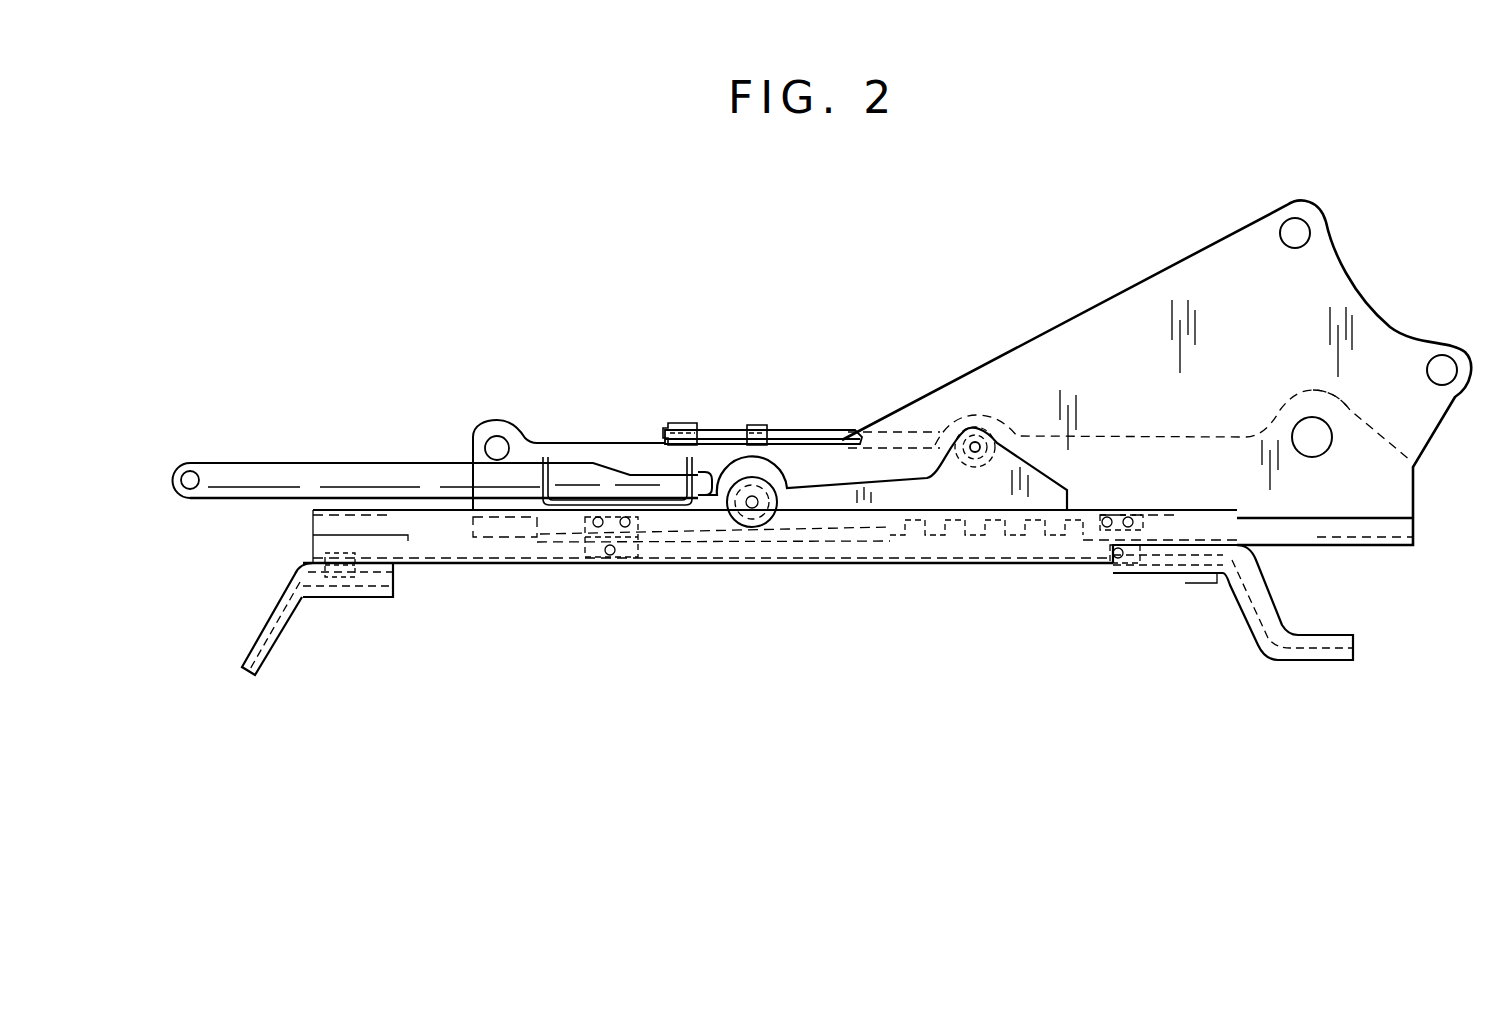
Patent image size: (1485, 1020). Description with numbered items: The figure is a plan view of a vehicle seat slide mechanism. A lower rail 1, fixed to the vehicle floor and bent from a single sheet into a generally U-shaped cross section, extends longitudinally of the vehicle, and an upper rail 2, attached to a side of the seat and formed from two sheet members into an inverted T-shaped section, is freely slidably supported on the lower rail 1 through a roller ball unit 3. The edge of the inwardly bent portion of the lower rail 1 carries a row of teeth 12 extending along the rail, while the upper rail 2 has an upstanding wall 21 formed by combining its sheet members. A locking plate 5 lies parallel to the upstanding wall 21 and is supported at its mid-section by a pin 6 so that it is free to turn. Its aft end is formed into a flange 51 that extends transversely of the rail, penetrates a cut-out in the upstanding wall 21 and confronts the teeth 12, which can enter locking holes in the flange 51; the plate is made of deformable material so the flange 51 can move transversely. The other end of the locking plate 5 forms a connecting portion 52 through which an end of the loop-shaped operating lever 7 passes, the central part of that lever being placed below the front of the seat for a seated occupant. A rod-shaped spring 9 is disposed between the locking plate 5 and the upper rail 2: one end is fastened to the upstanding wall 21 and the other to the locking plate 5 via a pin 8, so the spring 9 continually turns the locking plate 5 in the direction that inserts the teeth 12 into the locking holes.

The lower rail 1 is at (787, 564).
The teeth 12 is at (930, 545).
The upper rail 2 is at (1067, 323).
The upstanding wall 21 is at (988, 388).
The roller ball unit 3 is at (587, 552).
The locking plate 5 is at (843, 483).
The flange 51 is at (1022, 543).
The connecting portion 52 is at (545, 457).
The pin 6 is at (750, 498).
The operating lever 7 is at (330, 478).
The pin 8 is at (967, 417).
The rod-shaped spring 9 is at (787, 430).